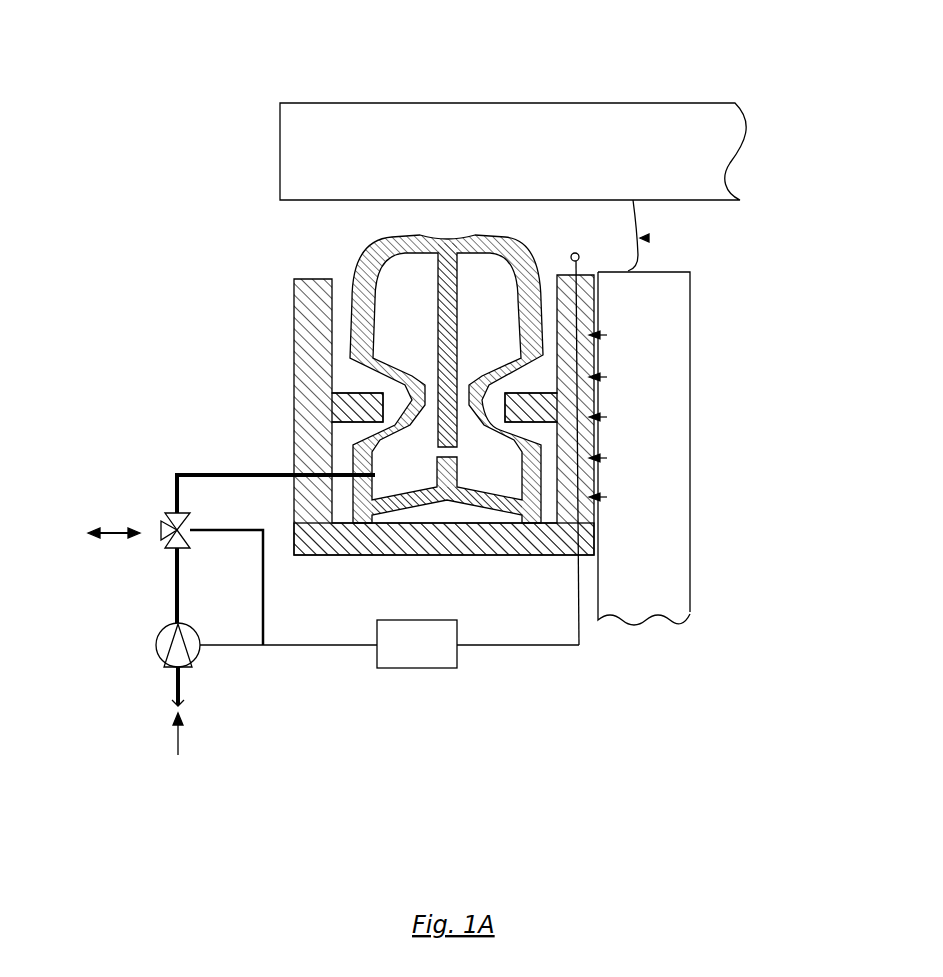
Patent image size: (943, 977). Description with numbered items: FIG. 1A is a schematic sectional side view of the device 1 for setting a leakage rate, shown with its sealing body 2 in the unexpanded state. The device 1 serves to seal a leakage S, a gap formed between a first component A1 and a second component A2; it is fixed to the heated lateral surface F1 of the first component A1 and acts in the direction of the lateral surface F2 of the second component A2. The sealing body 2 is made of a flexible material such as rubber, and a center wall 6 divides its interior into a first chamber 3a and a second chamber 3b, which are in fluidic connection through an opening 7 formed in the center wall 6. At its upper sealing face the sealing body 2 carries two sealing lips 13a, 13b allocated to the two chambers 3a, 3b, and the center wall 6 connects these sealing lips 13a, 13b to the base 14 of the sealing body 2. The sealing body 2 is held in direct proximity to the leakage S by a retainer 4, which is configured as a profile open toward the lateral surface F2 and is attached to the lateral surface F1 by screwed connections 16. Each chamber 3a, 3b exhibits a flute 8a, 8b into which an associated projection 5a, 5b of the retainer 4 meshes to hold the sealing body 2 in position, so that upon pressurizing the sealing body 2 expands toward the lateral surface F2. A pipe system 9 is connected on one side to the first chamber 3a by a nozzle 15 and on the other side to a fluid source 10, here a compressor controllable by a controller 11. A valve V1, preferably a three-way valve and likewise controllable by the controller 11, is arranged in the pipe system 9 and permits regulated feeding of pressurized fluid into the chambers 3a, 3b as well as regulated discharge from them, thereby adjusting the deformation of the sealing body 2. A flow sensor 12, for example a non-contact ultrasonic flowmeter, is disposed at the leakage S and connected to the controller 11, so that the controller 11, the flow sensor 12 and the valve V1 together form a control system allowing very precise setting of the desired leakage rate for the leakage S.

The device 1 is at (159, 292).
The sealing body 2 is at (365, 282).
The first chamber 3a is at (404, 288).
The second chamber 3b is at (481, 288).
The retainer 4 is at (412, 447).
The projection 5a is at (357, 407).
The projection 5b is at (531, 407).
The center wall 6 is at (455, 240).
The opening 7 is at (457, 490).
The flute 8a is at (412, 377).
The flute 8b is at (483, 377).
The pipe system 9 is at (225, 471).
The fluid source 10 is at (162, 650).
The controller 11 is at (418, 662).
The flow sensor 12 is at (578, 253).
The sealing lip 13a is at (405, 237).
The sealing lip 13b is at (490, 237).
The base 14 is at (437, 490).
The nozzle 15 is at (333, 463).
The screwed connections 16 is at (600, 337).
The first component A1 is at (683, 428).
The second component A2 is at (722, 123).
The lateral surface of the first component F1 is at (670, 275).
The lateral surface of the second component F2 is at (663, 200).
The leakage S is at (647, 235).
The valve V1 is at (170, 513).